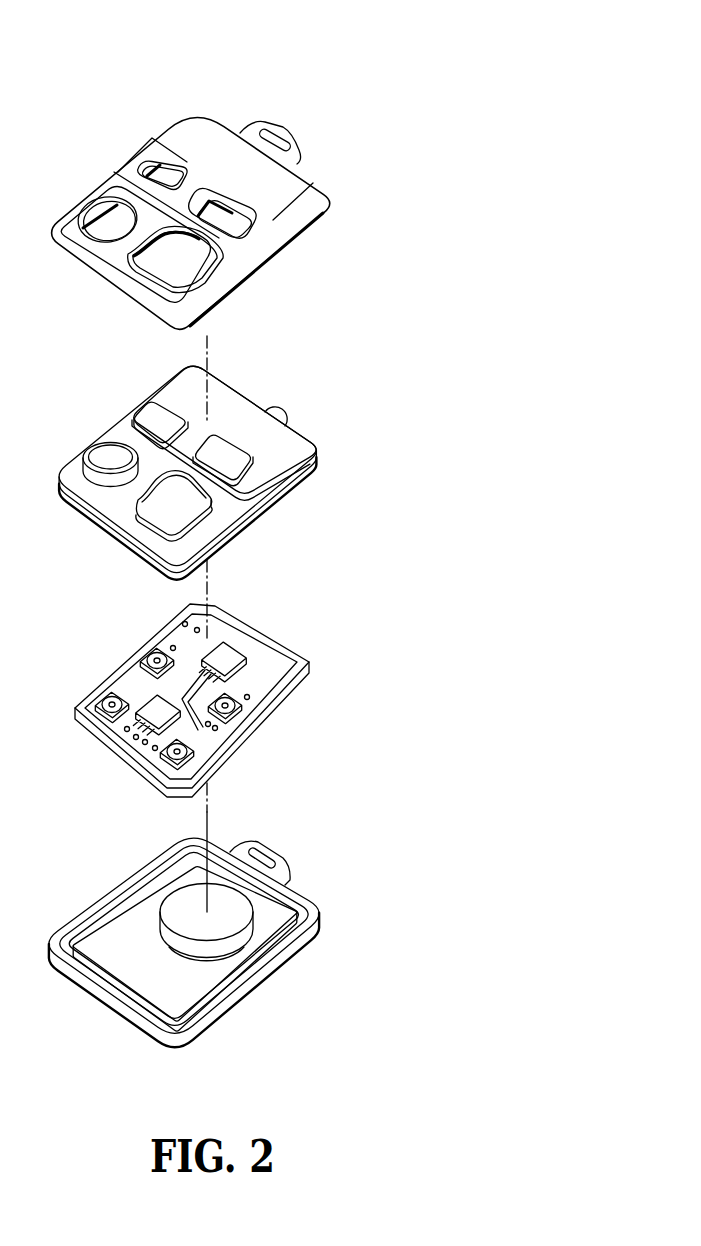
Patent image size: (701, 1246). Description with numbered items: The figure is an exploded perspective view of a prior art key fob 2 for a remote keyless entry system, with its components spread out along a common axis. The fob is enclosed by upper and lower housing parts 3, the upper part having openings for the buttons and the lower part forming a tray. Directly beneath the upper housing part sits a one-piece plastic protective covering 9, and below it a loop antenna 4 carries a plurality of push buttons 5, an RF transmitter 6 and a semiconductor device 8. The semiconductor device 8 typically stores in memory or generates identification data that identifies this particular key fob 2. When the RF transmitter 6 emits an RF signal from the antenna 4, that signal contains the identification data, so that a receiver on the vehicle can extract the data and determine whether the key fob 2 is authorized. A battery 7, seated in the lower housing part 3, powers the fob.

The key fob 2 is at (292, 53).
The upper and lower housing parts 3 is at (317, 170).
The loop antenna 4 is at (277, 692).
The push buttons 5 is at (157, 660).
The RF transmitter 6 is at (222, 650).
The battery 7 is at (232, 913).
The semiconductor device 8 is at (158, 705).
The one-piece plastic protective covering 9 is at (250, 388).